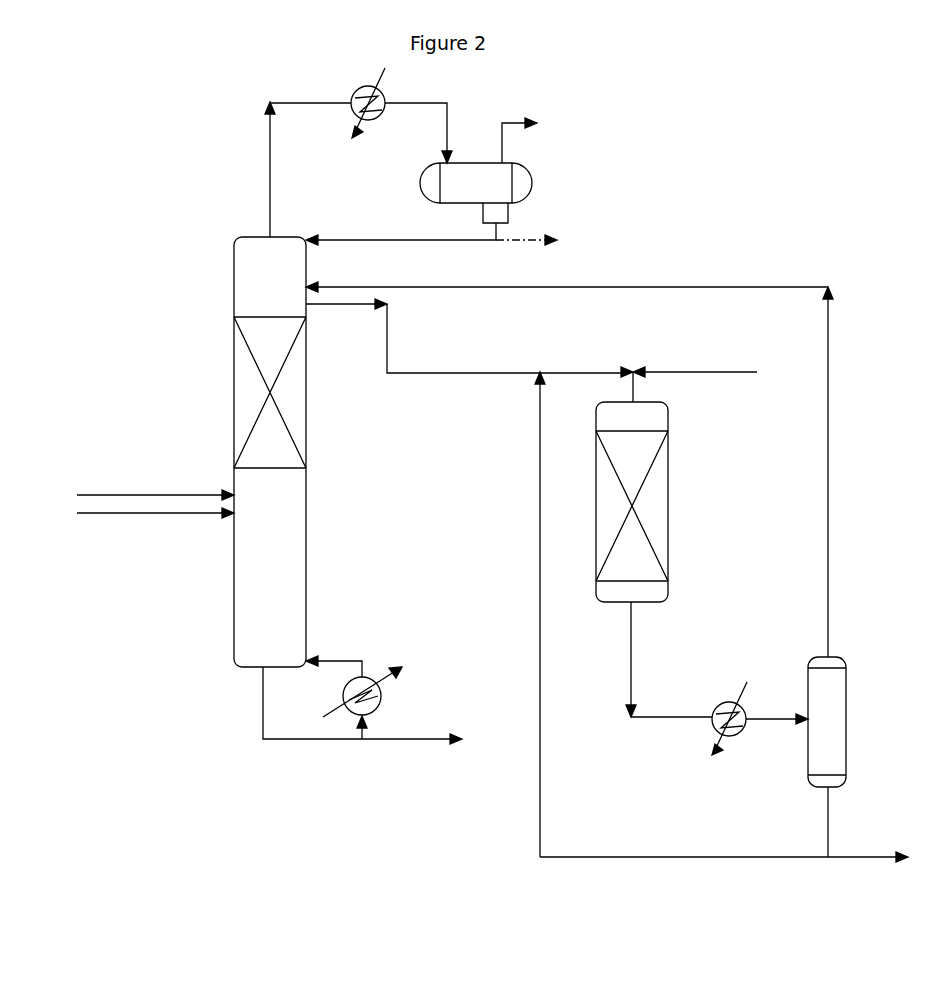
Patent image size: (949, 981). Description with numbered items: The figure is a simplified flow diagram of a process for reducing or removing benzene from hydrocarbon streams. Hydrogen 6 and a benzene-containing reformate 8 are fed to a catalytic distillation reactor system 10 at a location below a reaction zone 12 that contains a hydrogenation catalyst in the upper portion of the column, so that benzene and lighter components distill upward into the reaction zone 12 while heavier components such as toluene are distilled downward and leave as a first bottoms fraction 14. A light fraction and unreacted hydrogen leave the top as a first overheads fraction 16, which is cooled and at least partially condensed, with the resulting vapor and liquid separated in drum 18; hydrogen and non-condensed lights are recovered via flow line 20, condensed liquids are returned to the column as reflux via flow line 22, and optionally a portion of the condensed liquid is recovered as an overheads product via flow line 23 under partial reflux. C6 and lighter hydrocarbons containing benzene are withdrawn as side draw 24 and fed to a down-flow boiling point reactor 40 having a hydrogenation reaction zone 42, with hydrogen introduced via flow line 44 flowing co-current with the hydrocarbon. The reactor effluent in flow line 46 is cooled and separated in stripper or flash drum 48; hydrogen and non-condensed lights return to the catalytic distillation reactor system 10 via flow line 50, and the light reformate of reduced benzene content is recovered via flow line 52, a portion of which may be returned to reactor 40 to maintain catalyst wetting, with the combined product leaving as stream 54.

The hydrogen 6 is at (98, 516).
The benzene-containing reformate 8 is at (101, 496).
The catalytic distillation reactor system 10 is at (234, 238).
The reaction zone 12 is at (247, 387).
The first bottoms fraction 14 is at (420, 741).
The first overheads fraction 16 is at (268, 190).
The drum 18 is at (422, 176).
The flow line 20 is at (498, 122).
The flow line 22 is at (384, 233).
The flow line 23 is at (534, 244).
The side draw 24 is at (322, 308).
The down-flow boiling point reactor 40 is at (590, 416).
The hydrogenation reaction zone 42 is at (610, 503).
The flow line 44 is at (730, 368).
The flow line 46 is at (620, 646).
The stripper or flash drum 48 is at (827, 722).
The flow line 50 is at (832, 484).
The flow line 52 is at (814, 810).
The product stream 54 is at (744, 862).